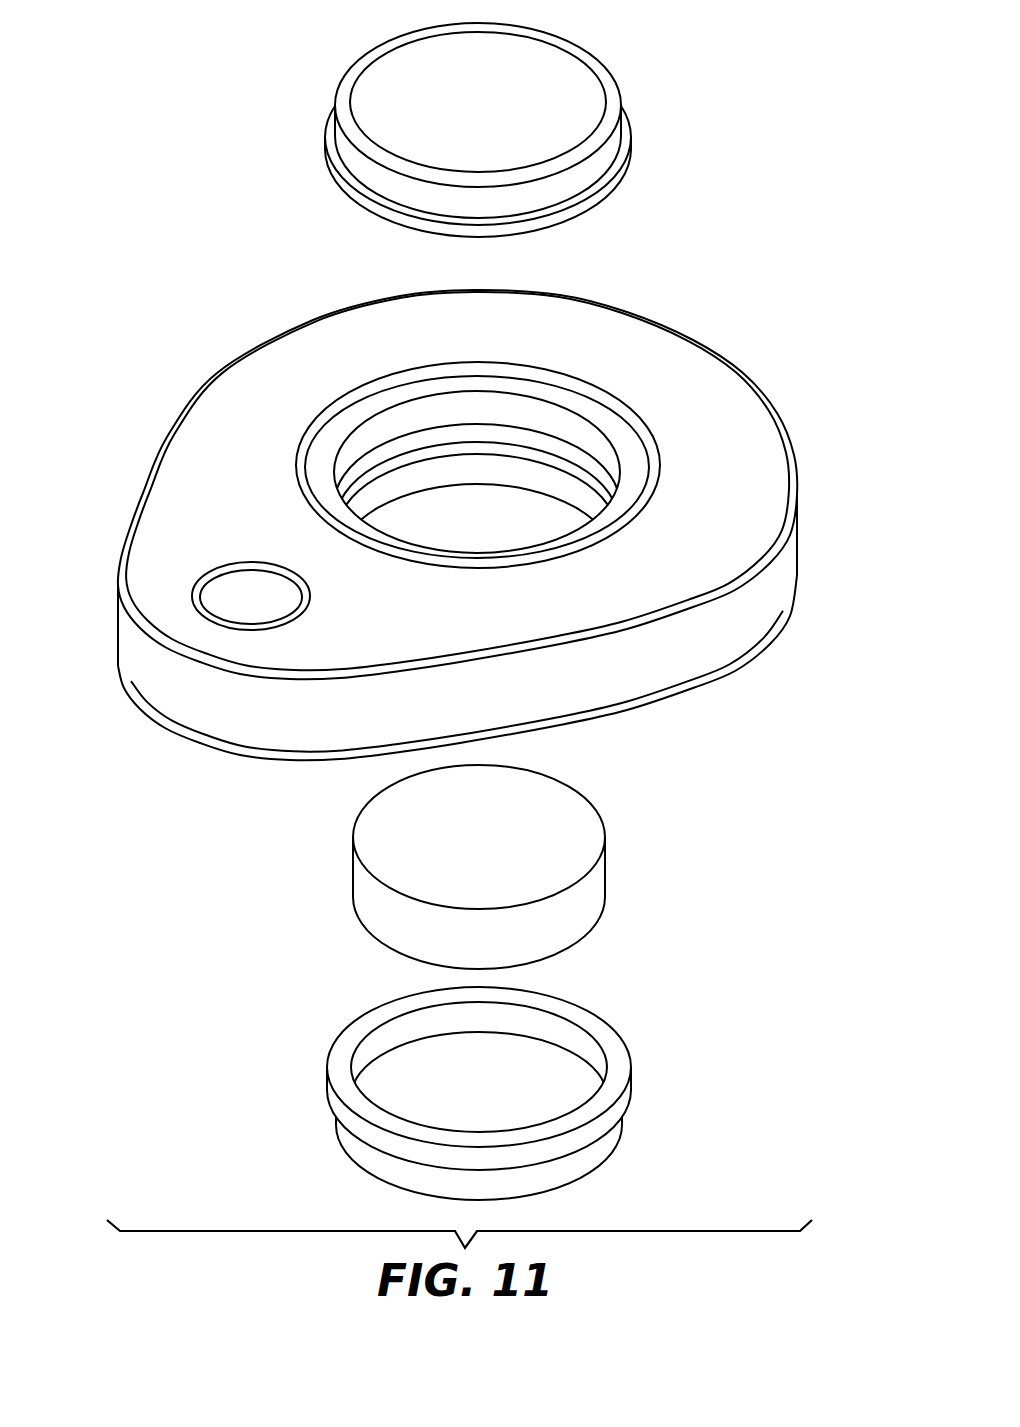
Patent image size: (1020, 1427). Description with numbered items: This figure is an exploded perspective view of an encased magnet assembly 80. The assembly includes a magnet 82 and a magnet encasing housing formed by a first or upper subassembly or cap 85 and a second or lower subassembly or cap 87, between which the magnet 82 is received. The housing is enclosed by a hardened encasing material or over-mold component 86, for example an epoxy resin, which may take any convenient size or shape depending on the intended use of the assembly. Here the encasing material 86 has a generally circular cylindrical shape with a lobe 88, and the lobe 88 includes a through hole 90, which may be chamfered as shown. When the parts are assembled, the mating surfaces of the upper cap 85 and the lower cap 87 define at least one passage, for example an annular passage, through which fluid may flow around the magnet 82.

The encased magnet assembly 80 is at (805, 101).
The magnet 82 is at (363, 890).
The first or upper subassembly or cap 85 is at (346, 91).
The hardened encasing material or over-mold component 86 is at (787, 547).
The second or lower subassembly or cap 87 is at (363, 1150).
The lobe 88 is at (135, 643).
The through hole 90 is at (250, 598).